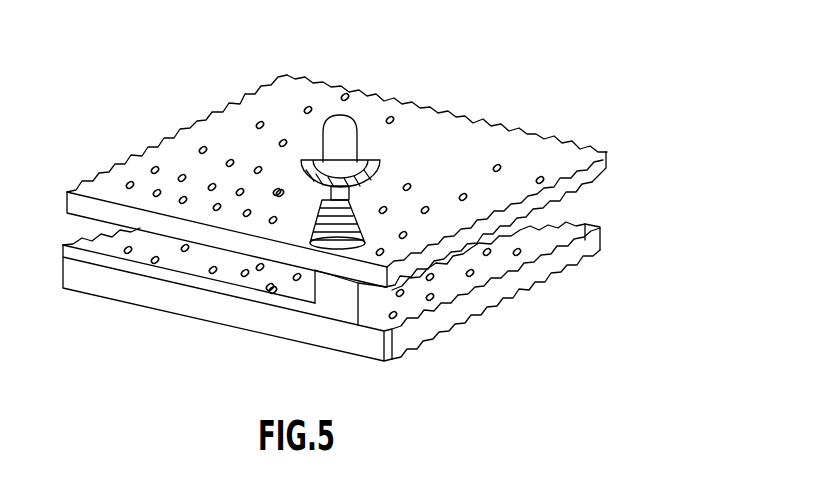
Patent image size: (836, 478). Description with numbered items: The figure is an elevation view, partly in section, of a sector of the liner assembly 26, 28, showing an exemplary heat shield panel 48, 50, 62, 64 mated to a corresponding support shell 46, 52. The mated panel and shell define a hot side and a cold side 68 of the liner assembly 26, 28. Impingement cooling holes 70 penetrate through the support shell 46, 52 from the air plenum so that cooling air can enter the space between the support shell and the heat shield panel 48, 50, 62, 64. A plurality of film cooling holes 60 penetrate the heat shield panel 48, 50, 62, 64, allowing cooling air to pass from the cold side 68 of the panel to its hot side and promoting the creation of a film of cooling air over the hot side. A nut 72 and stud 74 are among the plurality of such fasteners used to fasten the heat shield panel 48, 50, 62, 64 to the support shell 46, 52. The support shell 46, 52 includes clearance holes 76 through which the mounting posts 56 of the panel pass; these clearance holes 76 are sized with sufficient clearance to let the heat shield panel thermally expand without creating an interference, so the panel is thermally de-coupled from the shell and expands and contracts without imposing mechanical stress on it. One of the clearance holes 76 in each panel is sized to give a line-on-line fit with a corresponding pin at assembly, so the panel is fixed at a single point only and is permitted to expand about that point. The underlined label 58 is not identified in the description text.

The liner assembly 26 is at (393, 200).
The liner assembly 28 is at (187, 91).
The support shell 46 is at (395, 172).
The support shell 52 is at (607, 160).
The cold side 68 is at (447, 87).
The impingement cooling holes 70 is at (438, 169).
The nut 72 is at (320, 142).
The stud 74 is at (378, 152).
The clearance holes 76 is at (303, 243).
The heat shield panel 48 is at (338, 308).
The heat shield panel 50 is at (338, 308).
The heat shield panel 62 is at (338, 308).
The heat shield panel 64 is at (448, 332).
The base plate 58 is at (153, 341).
The film cooling holes 60 is at (478, 247).
The mounting posts 56 is at (335, 292).